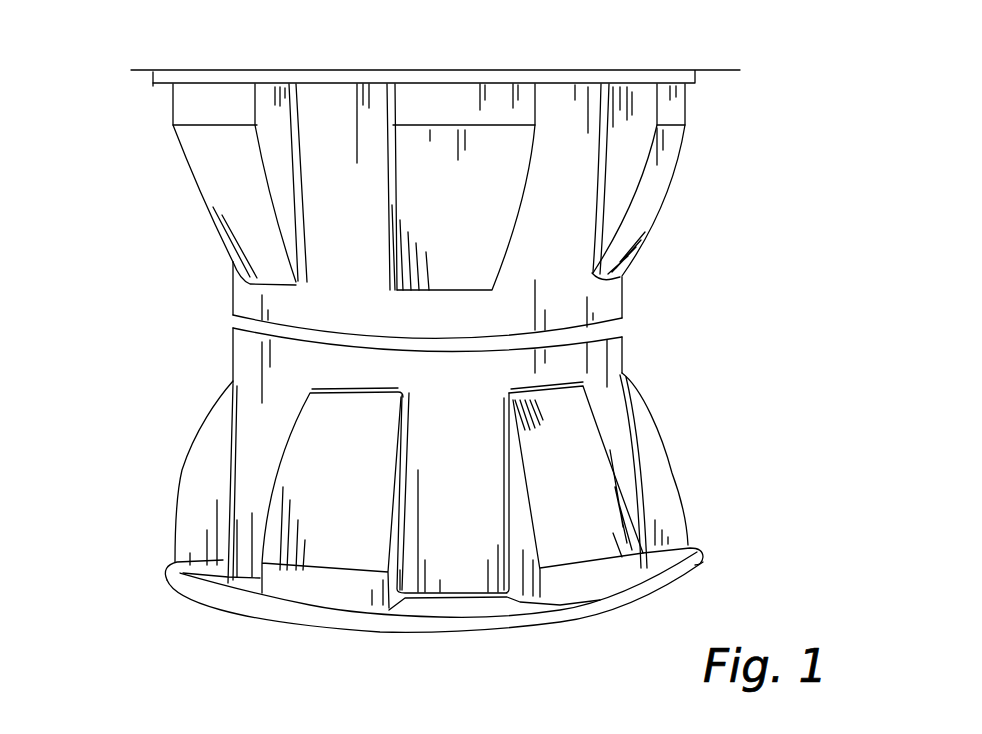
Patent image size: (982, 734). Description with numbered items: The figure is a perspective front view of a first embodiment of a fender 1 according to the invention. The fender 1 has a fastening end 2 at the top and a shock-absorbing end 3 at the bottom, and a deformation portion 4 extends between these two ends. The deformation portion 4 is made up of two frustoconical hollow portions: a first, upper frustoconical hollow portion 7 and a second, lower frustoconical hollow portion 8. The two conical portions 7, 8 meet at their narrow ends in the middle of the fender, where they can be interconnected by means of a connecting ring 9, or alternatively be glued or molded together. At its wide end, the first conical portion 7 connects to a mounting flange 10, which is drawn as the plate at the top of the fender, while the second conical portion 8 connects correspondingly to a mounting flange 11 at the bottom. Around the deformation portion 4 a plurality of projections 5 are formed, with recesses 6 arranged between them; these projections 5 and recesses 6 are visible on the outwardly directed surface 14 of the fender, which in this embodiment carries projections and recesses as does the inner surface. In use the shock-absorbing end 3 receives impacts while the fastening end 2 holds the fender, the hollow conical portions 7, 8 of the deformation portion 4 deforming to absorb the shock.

The fender 1 is at (803, 95).
The fastening end 2 is at (690, 64).
The shock-absorbing end 3 is at (640, 604).
The deformation portion 4 is at (735, 247).
The projections 5 is at (185, 147).
The recesses 6 is at (327, 108).
The first frustoconical hollow portion 7 is at (622, 293).
The second frustoconical hollow portion 8 is at (622, 350).
The connecting ring 9 is at (233, 316).
The mounting flange 10 is at (153, 79).
The mounting flange 11 is at (165, 580).
The outwardly directed surface 14 is at (248, 364).